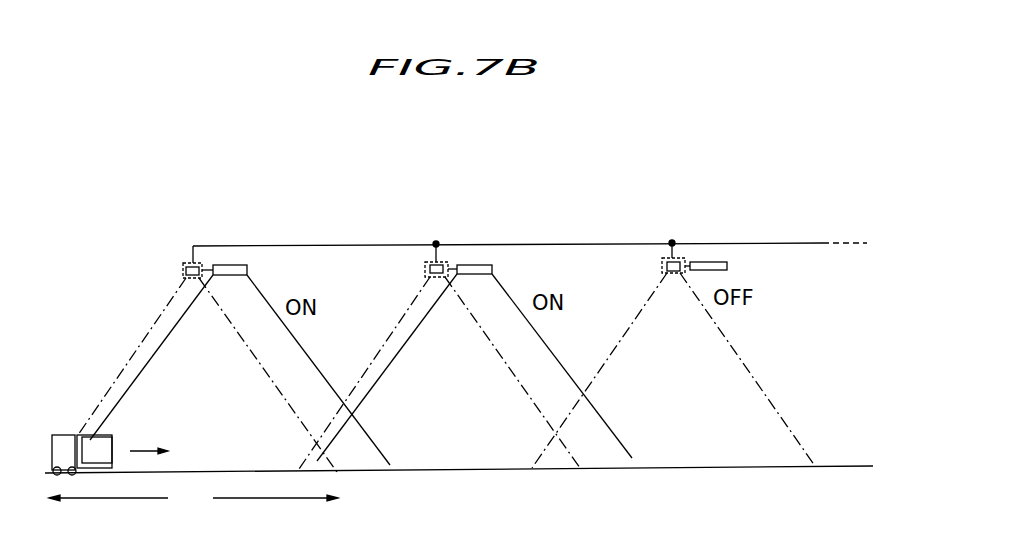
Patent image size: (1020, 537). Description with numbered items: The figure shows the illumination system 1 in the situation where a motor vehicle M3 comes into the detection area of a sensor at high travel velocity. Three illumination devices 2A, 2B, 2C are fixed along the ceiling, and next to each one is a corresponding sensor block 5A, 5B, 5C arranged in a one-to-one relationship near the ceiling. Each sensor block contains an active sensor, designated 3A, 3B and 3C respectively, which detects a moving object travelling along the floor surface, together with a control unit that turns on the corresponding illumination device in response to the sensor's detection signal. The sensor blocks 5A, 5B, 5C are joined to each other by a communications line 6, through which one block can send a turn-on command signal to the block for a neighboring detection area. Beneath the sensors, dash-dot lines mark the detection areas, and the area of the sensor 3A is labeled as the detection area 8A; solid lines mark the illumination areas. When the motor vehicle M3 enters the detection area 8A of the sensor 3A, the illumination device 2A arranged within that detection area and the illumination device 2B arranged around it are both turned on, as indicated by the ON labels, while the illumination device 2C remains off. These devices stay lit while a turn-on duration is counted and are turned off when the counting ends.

The illumination system 1 is at (477, 198).
The communications line 6 is at (319, 246).
The illumination device 2A is at (247, 270).
The illumination device 2B is at (492, 269).
The illumination device 2C is at (727, 266).
The active sensor 3A is at (183, 270).
The active sensor 3B is at (425, 269).
The active sensor 3C is at (662, 266).
The sensor block 5A is at (183, 278).
The sensor block 5B is at (427, 277).
The sensor block 5C is at (662, 274).
The motor vehicle M3 is at (66, 435).
The detection area 8A is at (193, 501).